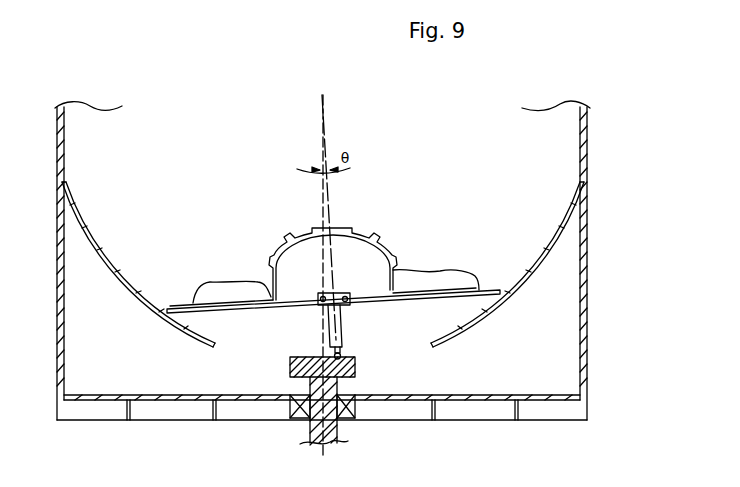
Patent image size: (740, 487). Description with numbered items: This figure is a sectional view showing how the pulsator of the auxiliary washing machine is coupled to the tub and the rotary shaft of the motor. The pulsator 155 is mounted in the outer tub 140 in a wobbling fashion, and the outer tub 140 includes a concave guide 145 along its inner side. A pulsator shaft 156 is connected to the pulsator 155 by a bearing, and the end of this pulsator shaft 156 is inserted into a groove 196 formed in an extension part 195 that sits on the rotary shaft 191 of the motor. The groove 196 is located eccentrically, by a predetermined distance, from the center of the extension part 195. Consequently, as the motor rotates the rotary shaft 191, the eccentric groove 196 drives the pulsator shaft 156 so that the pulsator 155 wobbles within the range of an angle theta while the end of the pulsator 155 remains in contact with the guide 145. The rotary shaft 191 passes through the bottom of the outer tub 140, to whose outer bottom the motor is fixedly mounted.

The outer tub 140 is at (587, 148).
The concave guide 145 is at (482, 320).
The pulsator 155 is at (363, 253).
The pulsator shaft 156 is at (343, 324).
The rotary shaft 191 is at (335, 428).
The extension part 195 is at (290, 363).
The groove 196 is at (355, 363).